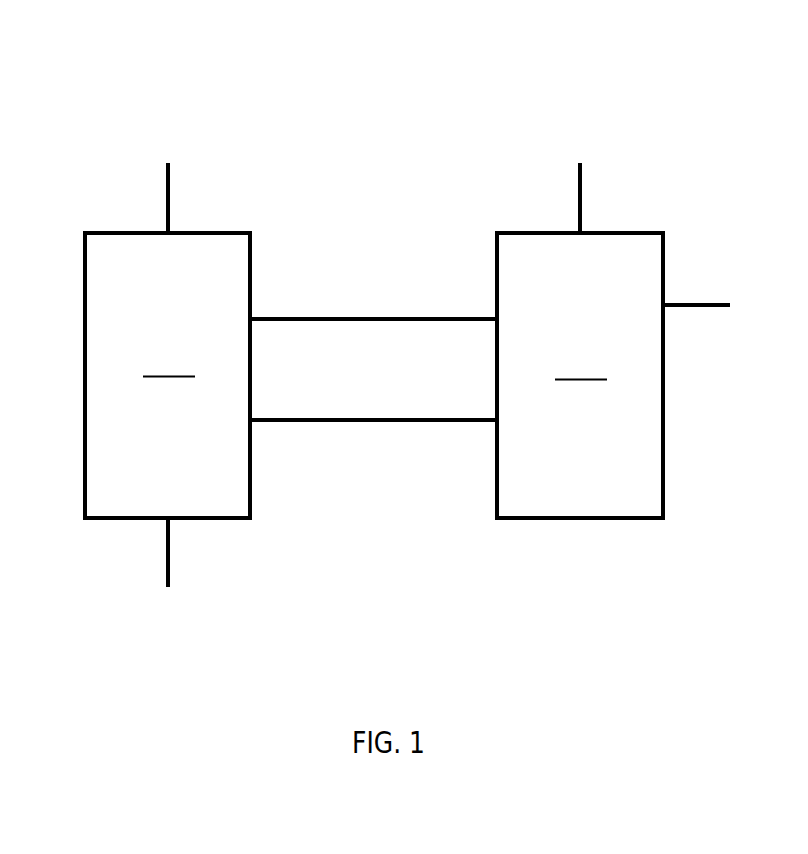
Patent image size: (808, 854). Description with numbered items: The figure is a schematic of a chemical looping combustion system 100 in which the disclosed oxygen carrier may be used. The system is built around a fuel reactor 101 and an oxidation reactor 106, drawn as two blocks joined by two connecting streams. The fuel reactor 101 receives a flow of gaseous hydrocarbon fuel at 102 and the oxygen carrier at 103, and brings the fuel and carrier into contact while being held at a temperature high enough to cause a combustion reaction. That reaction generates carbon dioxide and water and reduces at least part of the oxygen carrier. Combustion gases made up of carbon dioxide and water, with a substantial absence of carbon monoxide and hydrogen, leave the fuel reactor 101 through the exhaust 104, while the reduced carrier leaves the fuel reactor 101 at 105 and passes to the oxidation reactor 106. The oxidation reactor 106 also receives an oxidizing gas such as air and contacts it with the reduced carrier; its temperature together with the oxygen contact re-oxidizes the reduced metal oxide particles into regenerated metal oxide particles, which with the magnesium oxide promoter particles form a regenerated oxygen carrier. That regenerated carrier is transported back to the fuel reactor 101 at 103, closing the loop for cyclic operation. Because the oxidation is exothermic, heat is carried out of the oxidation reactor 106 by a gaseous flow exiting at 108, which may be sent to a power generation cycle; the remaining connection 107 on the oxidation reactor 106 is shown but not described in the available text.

The chemical combustion system 100 is at (273, 78).
The fuel reactor 101 is at (580, 375).
The gaseous hydrocarbon fuel flow 102 is at (713, 297).
The oxygen carrier flow 103 is at (457, 315).
The exhaust 104 is at (583, 193).
The reduced carrier flow 105 is at (448, 422).
The oxidation reactor 106 is at (167, 375).
The bottom terminal of second block 107 is at (165, 562).
The gaseous flow exit 108 is at (165, 188).